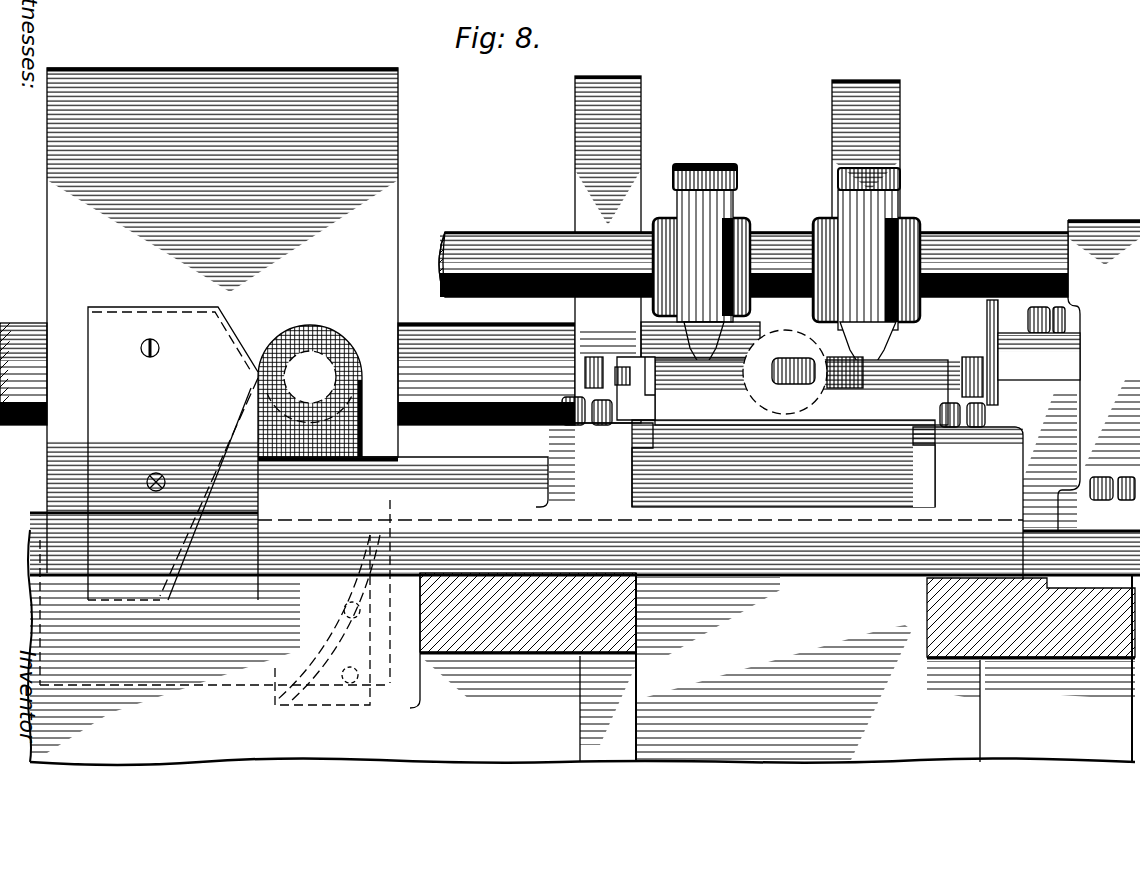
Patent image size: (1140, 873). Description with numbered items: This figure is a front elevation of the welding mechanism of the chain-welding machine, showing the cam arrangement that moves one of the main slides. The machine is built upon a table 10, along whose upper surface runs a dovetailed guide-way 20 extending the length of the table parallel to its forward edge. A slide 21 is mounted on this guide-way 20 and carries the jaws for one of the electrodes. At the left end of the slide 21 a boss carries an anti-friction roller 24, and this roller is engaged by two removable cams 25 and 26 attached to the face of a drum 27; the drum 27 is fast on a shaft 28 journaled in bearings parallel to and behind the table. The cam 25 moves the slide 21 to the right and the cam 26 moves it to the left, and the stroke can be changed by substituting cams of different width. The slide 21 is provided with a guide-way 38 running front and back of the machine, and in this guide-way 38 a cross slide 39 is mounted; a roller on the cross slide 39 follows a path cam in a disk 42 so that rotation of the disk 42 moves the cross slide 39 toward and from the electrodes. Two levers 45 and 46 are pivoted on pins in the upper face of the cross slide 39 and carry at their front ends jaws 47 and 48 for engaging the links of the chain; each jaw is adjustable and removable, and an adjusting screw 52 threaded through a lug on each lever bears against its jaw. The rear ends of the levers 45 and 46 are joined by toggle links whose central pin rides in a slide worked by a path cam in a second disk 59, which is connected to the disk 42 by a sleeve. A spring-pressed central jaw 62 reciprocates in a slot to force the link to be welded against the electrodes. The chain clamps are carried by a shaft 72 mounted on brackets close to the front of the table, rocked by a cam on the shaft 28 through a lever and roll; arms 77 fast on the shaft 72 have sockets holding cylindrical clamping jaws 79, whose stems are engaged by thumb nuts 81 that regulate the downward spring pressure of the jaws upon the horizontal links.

The table 10 is at (186, 748).
The dovetailed guide-way 20 is at (30, 516).
The right slide 21 is at (483, 482).
The anti-friction roller 24 is at (332, 343).
The cam 25 is at (130, 313).
The cam 26 is at (300, 710).
The drum 27 is at (391, 204).
The shaft 28 is at (458, 332).
The guide-way 38 is at (632, 482).
The cross slide 39 is at (935, 488).
The disk 42 is at (632, 126).
The lever 45 is at (640, 415).
The lever 46 is at (915, 418).
The jaw 47 is at (730, 364).
The jaw 48 is at (838, 388).
The adjusting screw 52 is at (593, 357).
The disk 59 is at (833, 127).
The central jaw 62 is at (788, 364).
The shaft 72 is at (485, 242).
The arm 77 is at (736, 216).
The cylindrical clamping jaw 79 is at (690, 352).
The thumb nut 81 is at (704, 174).